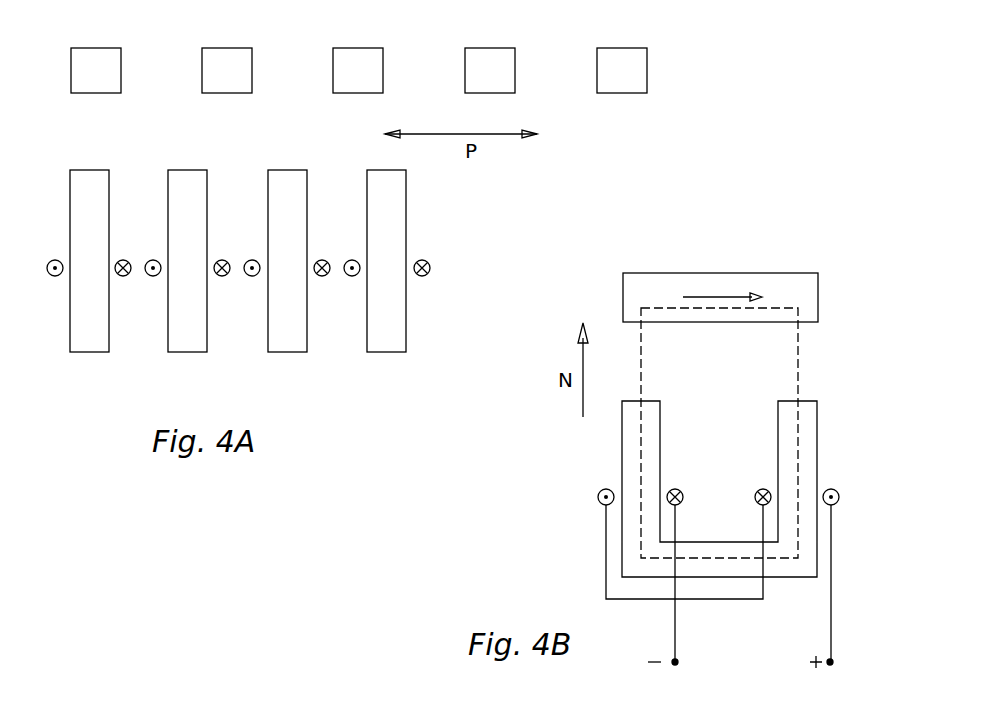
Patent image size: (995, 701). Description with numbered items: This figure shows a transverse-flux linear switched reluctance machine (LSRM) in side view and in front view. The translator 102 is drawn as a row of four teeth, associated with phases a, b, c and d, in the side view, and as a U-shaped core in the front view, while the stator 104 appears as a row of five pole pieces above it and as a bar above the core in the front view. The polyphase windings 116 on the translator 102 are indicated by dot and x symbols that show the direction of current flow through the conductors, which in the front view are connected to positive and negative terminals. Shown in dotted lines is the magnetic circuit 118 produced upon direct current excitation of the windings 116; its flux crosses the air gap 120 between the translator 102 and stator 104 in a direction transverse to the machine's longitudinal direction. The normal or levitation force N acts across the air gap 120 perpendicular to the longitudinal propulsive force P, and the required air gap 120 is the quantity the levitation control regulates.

In FIG. 4A, the translator 102 is at (70, 330).
In FIG. 4B, the translator 102 is at (817, 437).
In FIG. 4A, the stator 104 is at (121, 48).
In FIG. 4B, the stator 104 is at (623, 295).
In FIG. 4A, the polyphase windings 116 is at (55, 260).
In FIG. 4B, the polyphase windings 116 is at (598, 496).
In FIG. 4B, the magnetic circuit 118 is at (830, 363).
In FIG. 4A, the air gap 120 is at (86, 130).
In FIG. 4B, the air gap 120 is at (767, 433).